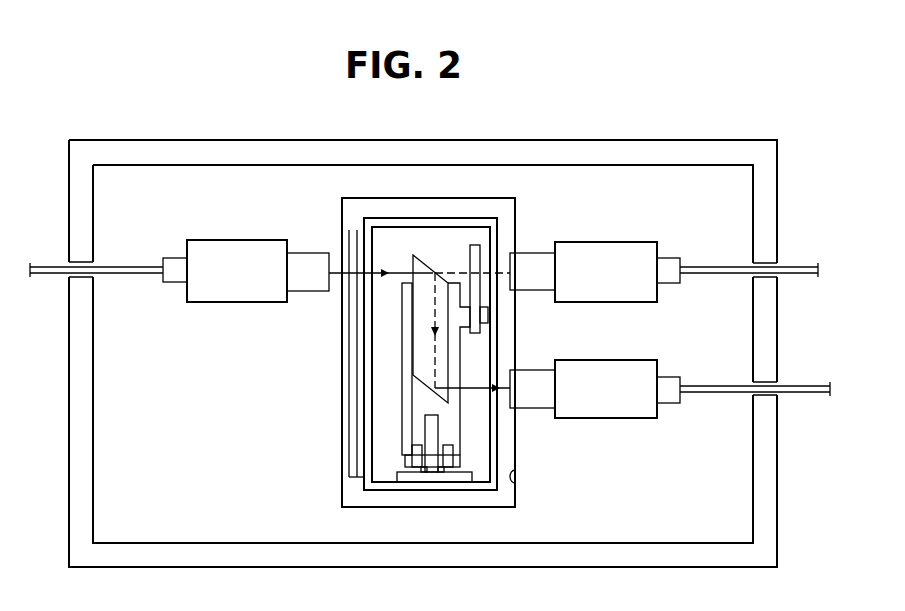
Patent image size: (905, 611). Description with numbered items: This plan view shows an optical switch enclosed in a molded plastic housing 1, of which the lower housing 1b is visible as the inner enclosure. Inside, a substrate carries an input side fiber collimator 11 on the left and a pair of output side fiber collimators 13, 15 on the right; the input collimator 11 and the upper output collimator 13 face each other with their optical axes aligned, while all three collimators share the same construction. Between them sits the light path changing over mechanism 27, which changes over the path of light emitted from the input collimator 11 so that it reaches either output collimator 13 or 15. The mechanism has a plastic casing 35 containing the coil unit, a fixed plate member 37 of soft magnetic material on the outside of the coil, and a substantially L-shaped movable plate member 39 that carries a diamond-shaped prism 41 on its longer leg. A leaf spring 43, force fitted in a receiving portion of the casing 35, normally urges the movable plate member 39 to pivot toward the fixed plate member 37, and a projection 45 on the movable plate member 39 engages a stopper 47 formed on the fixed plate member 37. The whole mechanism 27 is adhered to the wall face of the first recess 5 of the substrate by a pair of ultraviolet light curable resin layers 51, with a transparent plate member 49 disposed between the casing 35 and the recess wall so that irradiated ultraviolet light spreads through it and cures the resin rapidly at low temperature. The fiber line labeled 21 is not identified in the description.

The housing 1 is at (652, 140).
The lower housing 1b is at (777, 140).
The first recess 5 is at (515, 483).
The input side fiber collimator 11 is at (221, 241).
The output side fiber collimator 13 is at (625, 242).
The output side fiber collimator 15 is at (631, 426).
The optical fiber 21 is at (129, 265).
The light path changing over mechanism 27 is at (363, 199).
The casing 35 is at (497, 333).
The fixed plate member 37 is at (440, 232).
The movable plate member 39 is at (458, 420).
The diamond-shaped prism 41 is at (420, 317).
The leaf spring 43 is at (430, 473).
The projection 45 is at (488, 313).
The stopper 47 is at (476, 262).
The transparent plate member 49 is at (317, 359).
The ultraviolet light curable resin layers 51 is at (357, 441).